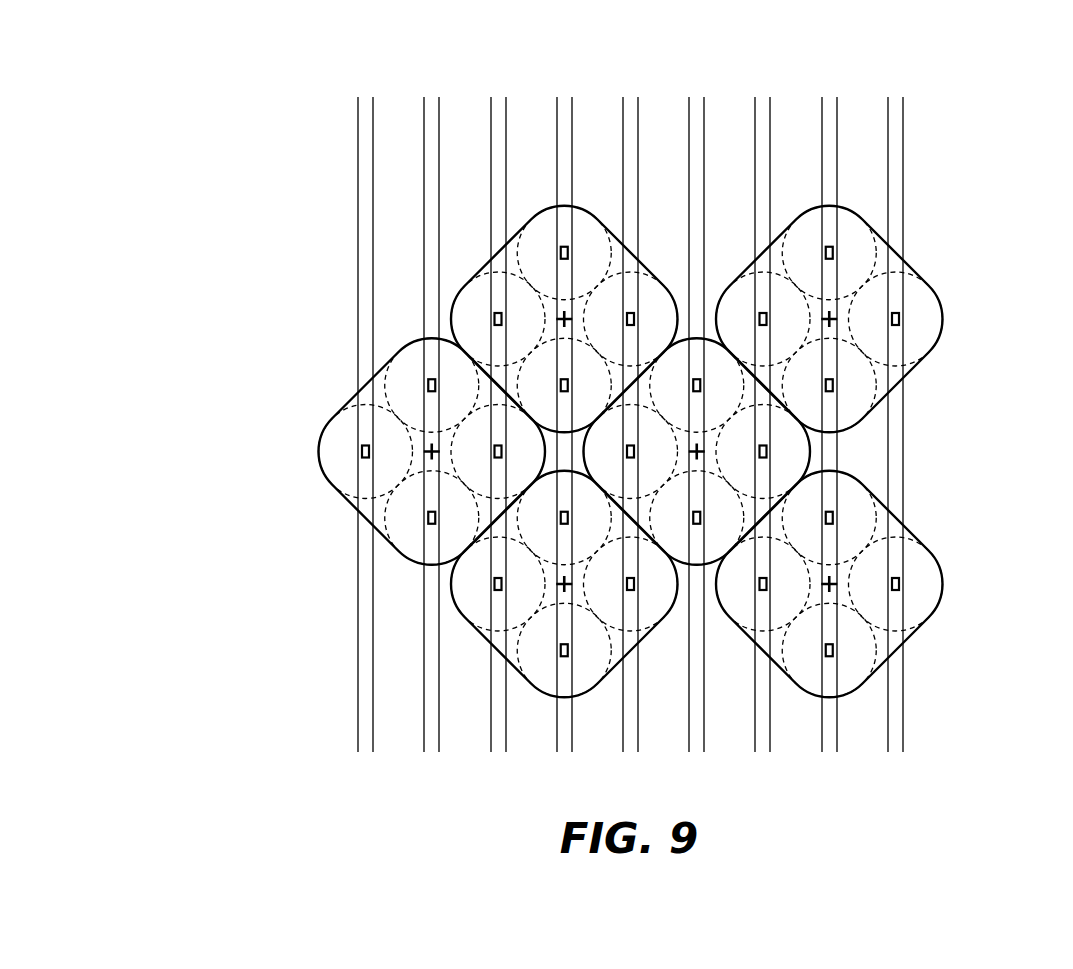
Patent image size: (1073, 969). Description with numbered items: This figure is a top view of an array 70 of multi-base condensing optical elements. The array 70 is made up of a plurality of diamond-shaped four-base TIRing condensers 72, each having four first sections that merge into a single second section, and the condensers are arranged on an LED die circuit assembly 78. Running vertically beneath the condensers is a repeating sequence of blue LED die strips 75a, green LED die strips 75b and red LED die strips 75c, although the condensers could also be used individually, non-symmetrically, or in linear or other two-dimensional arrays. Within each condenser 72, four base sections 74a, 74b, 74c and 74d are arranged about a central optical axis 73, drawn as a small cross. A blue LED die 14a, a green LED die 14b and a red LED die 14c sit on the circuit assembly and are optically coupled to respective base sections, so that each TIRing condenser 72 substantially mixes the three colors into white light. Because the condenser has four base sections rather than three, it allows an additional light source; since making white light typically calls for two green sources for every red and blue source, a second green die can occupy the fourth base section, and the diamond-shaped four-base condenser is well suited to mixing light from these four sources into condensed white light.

The array 70 is at (212, 57).
The four-base TIRing condenser 72 is at (348, 400).
The optical axis 73 is at (430, 452).
The base section 74a is at (800, 316).
The base section 74b is at (855, 225).
The base section 74c is at (933, 318).
The base section 74d is at (852, 413).
The blue LED die 14a is at (362, 451).
The green LED die 14b is at (430, 384).
The red LED die 14c is at (497, 451).
The blue LED die strip 75a is at (365, 97).
The green LED die strip 75b is at (433, 97).
The red LED die strip 75c is at (498, 97).
The LED die circuit assembly 78 is at (397, 673).